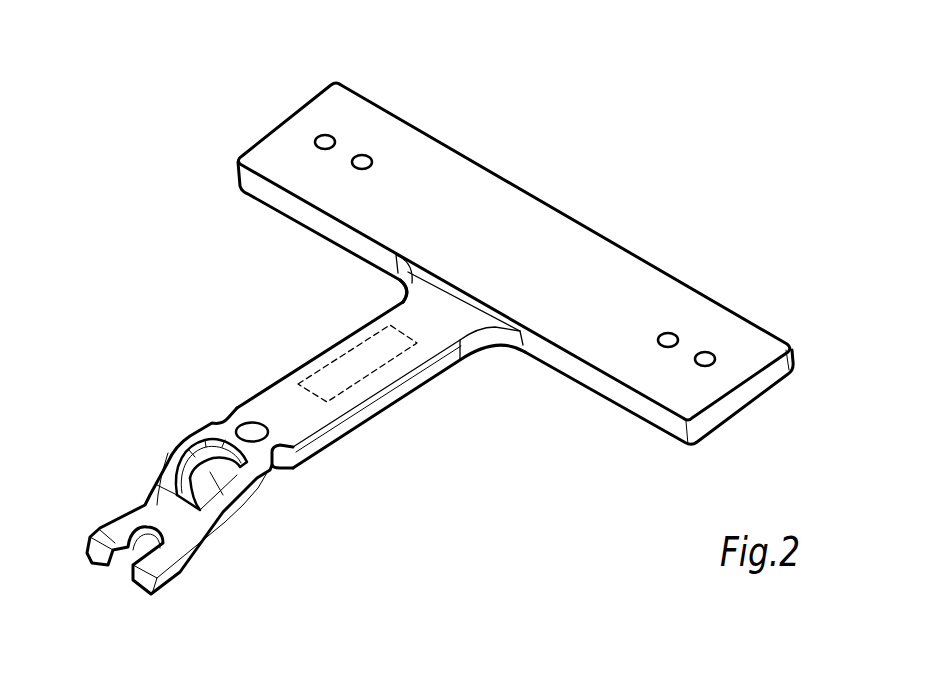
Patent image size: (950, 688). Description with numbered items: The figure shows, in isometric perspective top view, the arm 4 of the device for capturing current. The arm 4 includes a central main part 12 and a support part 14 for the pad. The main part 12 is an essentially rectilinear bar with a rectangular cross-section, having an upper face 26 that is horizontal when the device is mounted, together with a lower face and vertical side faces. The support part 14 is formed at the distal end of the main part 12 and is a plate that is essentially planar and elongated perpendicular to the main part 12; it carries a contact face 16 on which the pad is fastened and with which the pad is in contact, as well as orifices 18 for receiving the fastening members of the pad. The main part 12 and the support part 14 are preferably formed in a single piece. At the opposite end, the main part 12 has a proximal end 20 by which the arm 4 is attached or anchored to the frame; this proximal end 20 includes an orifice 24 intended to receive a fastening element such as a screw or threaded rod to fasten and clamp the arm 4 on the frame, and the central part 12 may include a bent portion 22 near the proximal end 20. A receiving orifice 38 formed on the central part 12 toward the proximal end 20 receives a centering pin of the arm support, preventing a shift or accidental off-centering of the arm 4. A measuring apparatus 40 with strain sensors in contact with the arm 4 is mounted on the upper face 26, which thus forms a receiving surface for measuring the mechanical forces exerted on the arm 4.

The arm 4 is at (185, 145).
The central main part 12 is at (343, 423).
The support part 14 is at (747, 392).
The contact face 16 is at (518, 252).
The orifices 18 is at (331, 130).
The proximal end 20 is at (112, 585).
The bent portion 22 is at (238, 498).
The orifice 24 is at (141, 545).
The upper face 26 is at (418, 320).
The receiving orifice 38 is at (248, 425).
The measuring apparatus 40 is at (370, 357).